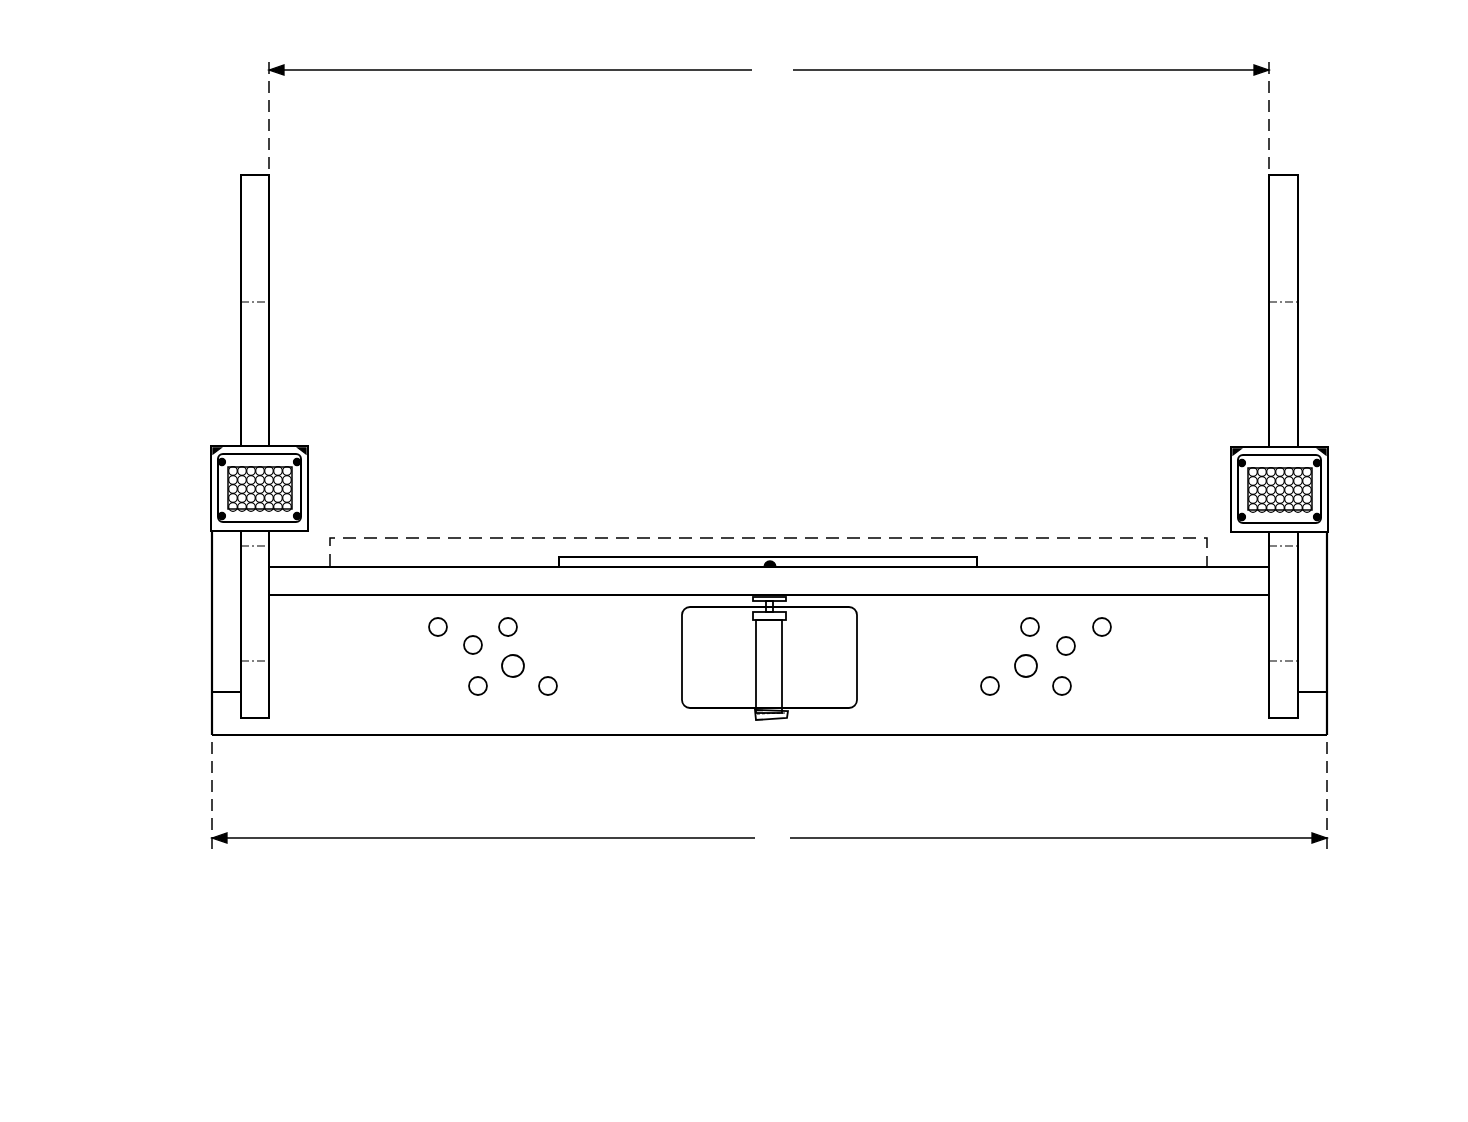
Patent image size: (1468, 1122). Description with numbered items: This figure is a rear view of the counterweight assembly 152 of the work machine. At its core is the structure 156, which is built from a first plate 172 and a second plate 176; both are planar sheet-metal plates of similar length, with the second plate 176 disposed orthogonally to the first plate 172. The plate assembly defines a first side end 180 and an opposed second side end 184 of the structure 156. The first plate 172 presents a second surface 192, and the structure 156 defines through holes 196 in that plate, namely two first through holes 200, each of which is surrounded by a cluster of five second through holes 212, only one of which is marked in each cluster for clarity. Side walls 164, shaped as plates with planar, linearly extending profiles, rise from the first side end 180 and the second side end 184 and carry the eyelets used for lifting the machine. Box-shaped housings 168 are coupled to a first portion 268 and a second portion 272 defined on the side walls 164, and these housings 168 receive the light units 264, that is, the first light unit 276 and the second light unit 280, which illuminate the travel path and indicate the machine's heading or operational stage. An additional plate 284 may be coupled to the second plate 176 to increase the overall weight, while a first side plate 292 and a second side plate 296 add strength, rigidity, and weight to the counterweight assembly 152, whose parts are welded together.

The counterweight assembly 152 is at (207, 105).
The structure 156 is at (1031, 567).
The side walls 164 is at (241, 212).
The housings 168 is at (308, 447).
The first plate 172 is at (767, 636).
The second plate 176 is at (435, 567).
The first side end 180 is at (1328, 712).
The second side end 184 is at (211, 712).
The second surface 192 is at (640, 690).
The through holes 196 is at (821, 711).
The first through holes 200 is at (510, 674).
The second through holes 212 is at (438, 636).
The light units 264 is at (767, 442).
The first portion 268 is at (1280, 447).
The second portion 272 is at (262, 446).
The first light unit 276 is at (1290, 495).
The second light unit 280 is at (248, 495).
The additional plate 284 is at (535, 538).
The first side plate 292 is at (1327, 585).
The second side plate 296 is at (212, 585).